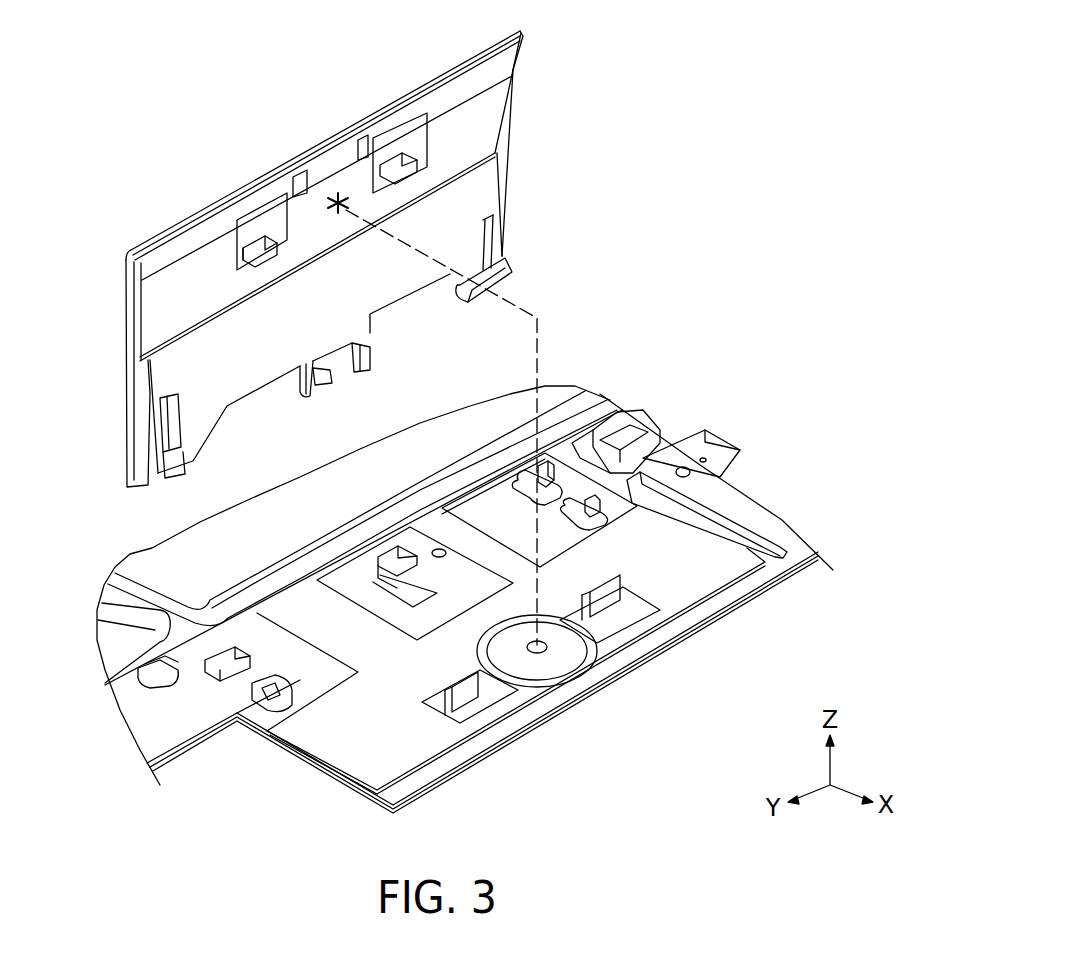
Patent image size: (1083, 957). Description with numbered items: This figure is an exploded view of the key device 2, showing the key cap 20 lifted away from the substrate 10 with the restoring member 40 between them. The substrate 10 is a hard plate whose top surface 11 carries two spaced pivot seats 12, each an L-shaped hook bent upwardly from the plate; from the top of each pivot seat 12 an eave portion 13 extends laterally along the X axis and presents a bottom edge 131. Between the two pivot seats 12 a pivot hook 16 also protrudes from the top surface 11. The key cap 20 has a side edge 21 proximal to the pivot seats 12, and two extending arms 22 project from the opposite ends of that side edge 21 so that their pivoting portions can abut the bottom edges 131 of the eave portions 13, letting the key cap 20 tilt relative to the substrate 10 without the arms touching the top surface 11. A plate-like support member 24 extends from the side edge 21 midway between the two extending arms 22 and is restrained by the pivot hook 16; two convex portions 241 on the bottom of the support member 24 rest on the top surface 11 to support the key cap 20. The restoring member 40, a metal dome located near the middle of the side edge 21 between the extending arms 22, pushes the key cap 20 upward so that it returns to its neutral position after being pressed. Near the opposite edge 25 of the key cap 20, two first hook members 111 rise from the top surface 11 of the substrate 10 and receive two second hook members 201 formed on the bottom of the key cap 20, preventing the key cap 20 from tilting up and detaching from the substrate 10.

The key device 2 is at (708, 103).
The substrate 10 is at (633, 667).
The top surface 11 is at (510, 725).
The pivot seat 12 is at (546, 452).
The eave portion 13 is at (648, 445).
The pivot hook 16 is at (383, 547).
The key cap 20 is at (160, 307).
The side edge 21 is at (127, 402).
The extending arm 22 is at (135, 470).
The support member 24 is at (297, 378).
The opposite edge 25 is at (170, 233).
The restoring member 40 is at (567, 665).
The first hook member 111 is at (453, 693).
The bottom edge 131 is at (672, 452).
The second hook member 201 is at (265, 235).
The convex portion 241 is at (320, 386).